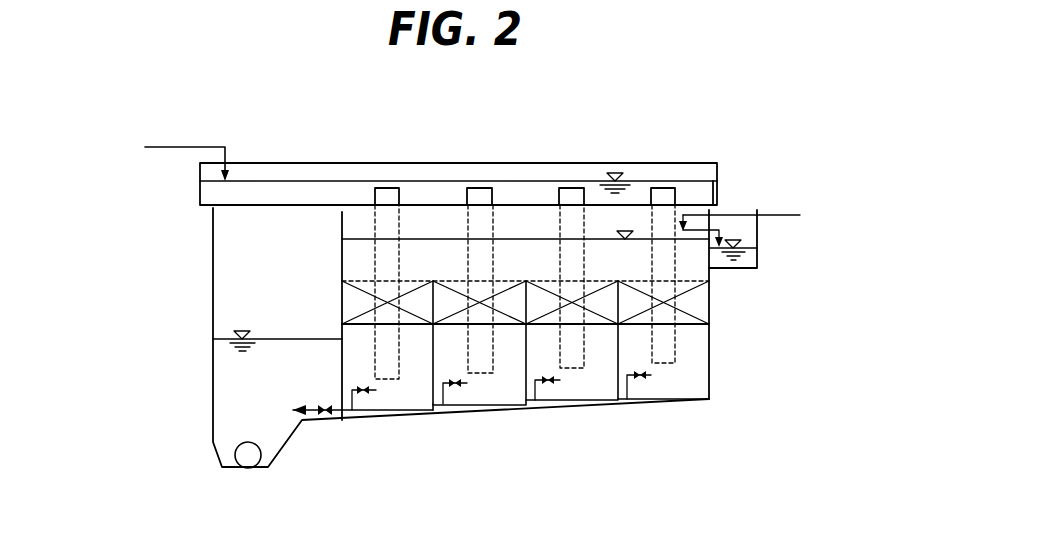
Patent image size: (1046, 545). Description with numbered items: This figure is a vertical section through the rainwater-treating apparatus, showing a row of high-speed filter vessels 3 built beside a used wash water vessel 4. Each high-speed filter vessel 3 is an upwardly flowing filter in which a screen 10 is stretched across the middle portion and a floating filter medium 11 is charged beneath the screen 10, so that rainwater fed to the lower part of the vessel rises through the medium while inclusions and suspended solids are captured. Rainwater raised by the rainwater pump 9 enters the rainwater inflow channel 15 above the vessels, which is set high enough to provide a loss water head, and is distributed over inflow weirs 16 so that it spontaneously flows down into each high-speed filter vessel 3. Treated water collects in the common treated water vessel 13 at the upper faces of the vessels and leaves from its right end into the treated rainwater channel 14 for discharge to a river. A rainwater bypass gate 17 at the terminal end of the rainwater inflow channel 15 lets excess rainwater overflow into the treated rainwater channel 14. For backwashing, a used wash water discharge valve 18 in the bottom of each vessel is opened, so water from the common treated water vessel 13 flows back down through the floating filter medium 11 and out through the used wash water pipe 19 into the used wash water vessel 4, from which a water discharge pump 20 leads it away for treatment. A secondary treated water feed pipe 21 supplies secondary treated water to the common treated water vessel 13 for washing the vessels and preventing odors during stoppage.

The high-speed filter vessel 3 is at (408, 395).
The used wash water vessel 4 is at (283, 345).
The rainwater pump 9 is at (150, 158).
The screen 10 is at (408, 281).
The floating filter medium 11 is at (422, 298).
The common treated water vessel 13 is at (530, 258).
The treated rainwater channel 14 is at (750, 258).
The rainwater inflow channel 15 is at (304, 194).
The inflow weir 16 is at (388, 195).
The rainwater bypass gate 17 is at (716, 194).
The used wash water discharge valve 18 is at (367, 396).
The used wash water pipe 19 is at (350, 415).
The water discharge pump 20 is at (250, 442).
The secondary treated water feed pipe 21 is at (778, 215).